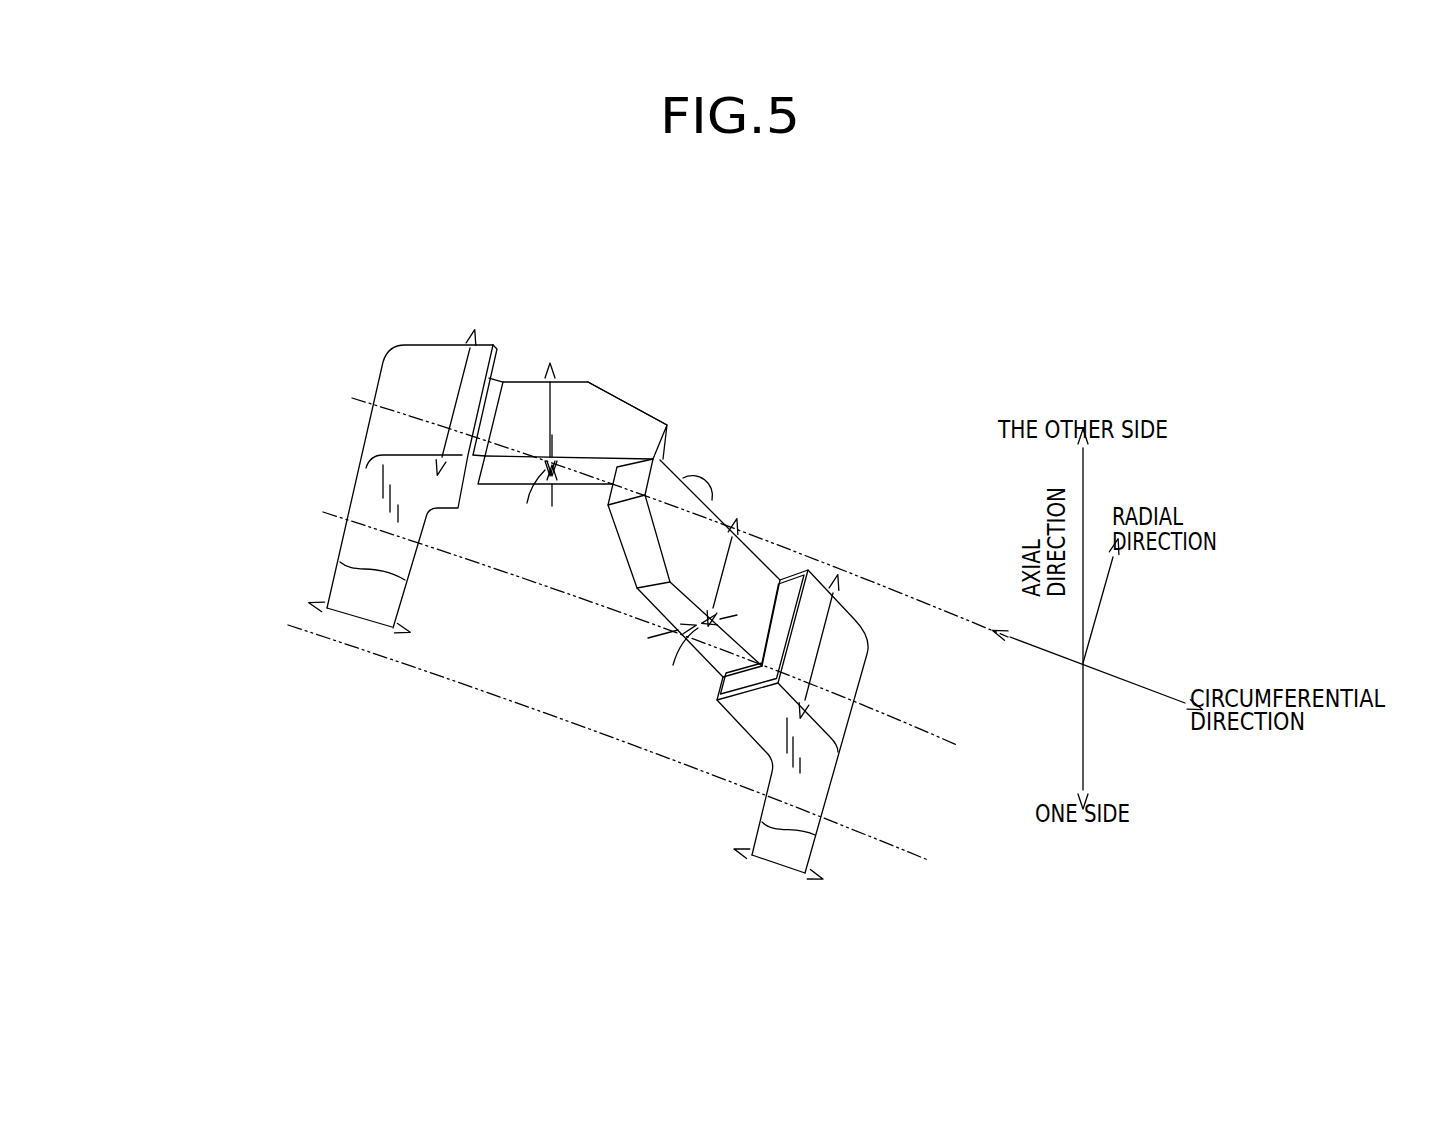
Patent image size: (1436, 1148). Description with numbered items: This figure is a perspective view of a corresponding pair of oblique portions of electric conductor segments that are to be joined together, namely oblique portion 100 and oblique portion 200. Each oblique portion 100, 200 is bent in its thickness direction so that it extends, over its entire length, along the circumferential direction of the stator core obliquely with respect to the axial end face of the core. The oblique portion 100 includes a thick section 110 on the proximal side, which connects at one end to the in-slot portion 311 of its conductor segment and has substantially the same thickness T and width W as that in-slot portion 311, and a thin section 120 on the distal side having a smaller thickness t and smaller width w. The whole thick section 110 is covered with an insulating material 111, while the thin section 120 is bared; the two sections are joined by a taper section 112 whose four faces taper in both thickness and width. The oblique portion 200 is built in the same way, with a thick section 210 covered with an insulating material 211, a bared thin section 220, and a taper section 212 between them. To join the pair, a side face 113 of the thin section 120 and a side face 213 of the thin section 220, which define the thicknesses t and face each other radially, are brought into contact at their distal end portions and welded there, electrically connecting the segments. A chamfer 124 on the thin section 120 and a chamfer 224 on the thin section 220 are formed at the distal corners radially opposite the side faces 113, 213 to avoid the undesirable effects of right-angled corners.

The oblique portion 100 is at (503, 413).
The thick section 110 is at (390, 427).
The insulating material 111 is at (497, 368).
The taper section 112 is at (495, 388).
The side face 113 is at (603, 475).
The thin section 120 is at (618, 408).
The chamfer 124 is at (643, 408).
The oblique portion 200 is at (751, 635).
The thick section 210 is at (758, 713).
The insulating material 211 is at (803, 583).
The taper section 212 is at (792, 577).
The side face 213 is at (637, 588).
The thin section 220 is at (760, 608).
The chamfer 224 is at (635, 530).
The in-slot portion 311 is at (363, 537).